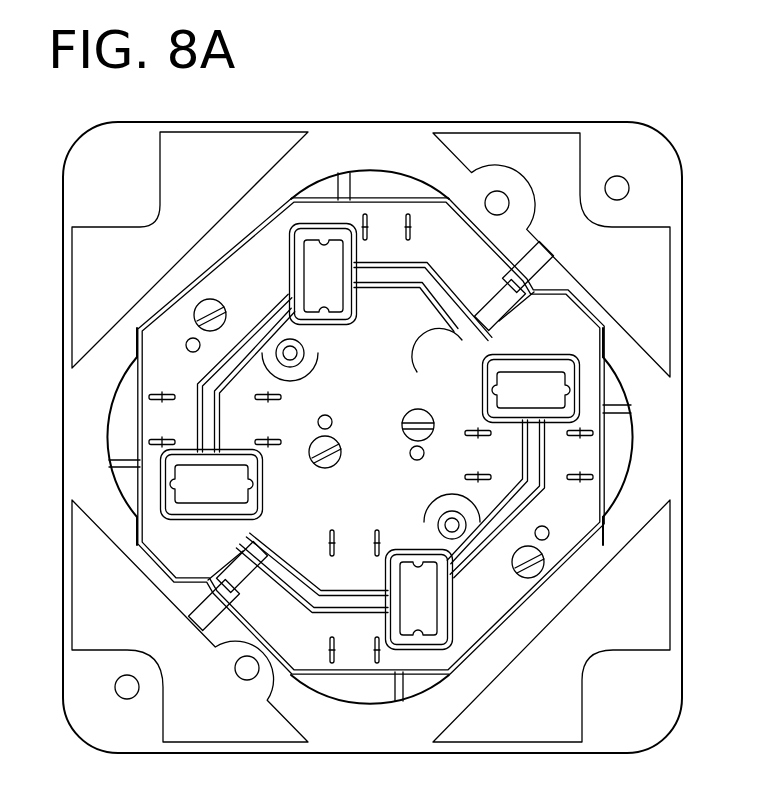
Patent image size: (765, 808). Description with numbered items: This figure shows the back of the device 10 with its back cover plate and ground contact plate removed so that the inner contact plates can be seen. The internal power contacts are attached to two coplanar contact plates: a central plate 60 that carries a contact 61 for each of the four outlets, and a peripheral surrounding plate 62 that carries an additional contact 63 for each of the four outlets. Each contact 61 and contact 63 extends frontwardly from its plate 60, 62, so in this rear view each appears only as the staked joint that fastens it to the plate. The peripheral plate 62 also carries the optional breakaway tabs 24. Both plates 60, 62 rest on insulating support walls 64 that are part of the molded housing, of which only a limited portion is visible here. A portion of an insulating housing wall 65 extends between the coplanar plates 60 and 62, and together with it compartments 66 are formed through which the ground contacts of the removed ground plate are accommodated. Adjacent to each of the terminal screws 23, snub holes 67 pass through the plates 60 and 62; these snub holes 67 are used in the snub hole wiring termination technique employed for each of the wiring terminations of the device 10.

The device 10 is at (600, 122).
The terminal screw 23 is at (212, 299).
The breakaway tab 24 is at (243, 592).
The central plate 60 is at (417, 371).
The contact 61 is at (365, 528).
The peripheral surrounding plate 62 is at (180, 548).
The contact 63 is at (366, 214).
The insulating support wall 64 is at (350, 192).
The insulating housing wall 65 is at (525, 503).
The compartment 66 is at (428, 622).
The snub hole 67 is at (187, 341).